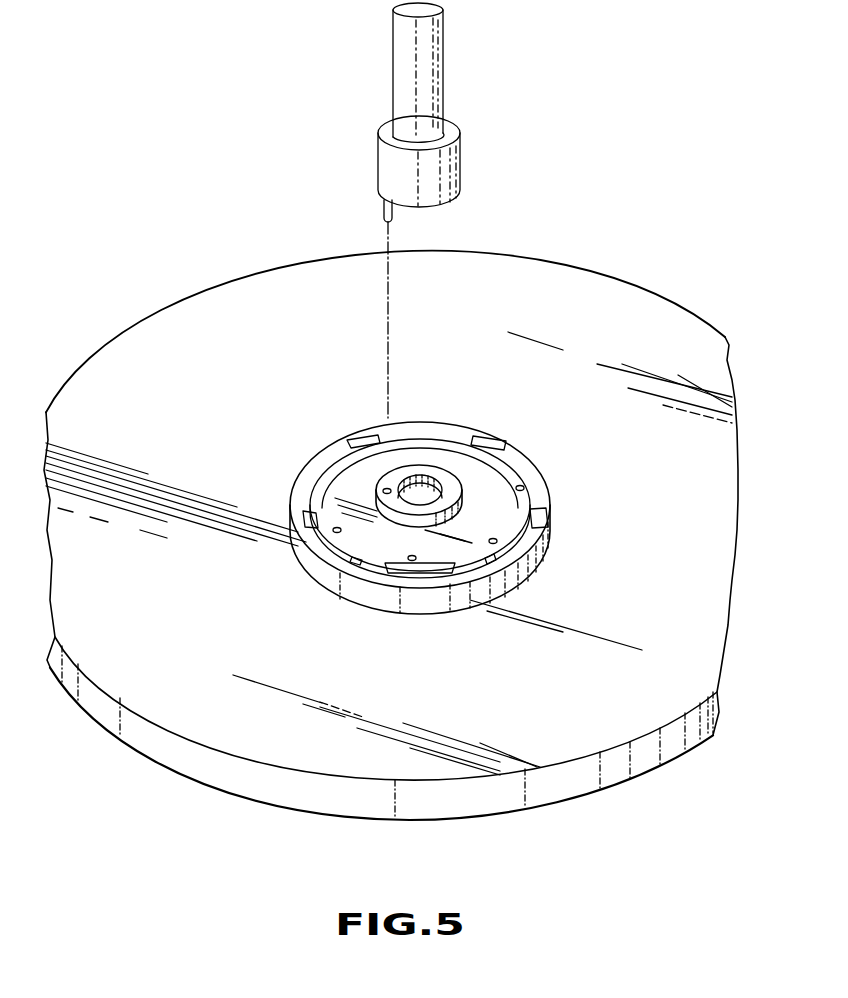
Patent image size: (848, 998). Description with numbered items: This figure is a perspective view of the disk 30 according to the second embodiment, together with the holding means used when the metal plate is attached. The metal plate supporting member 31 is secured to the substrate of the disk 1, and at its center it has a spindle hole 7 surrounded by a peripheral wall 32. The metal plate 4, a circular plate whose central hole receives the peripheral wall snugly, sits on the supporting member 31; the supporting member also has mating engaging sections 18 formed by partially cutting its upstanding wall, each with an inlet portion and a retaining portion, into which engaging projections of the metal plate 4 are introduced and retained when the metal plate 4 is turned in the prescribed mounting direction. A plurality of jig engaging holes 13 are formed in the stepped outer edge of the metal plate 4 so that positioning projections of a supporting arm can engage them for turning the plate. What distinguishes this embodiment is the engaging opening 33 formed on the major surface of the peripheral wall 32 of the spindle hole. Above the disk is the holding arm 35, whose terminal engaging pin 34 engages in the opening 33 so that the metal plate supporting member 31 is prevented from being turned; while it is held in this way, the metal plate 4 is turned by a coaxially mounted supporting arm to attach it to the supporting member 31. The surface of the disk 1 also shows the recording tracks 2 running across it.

The disk 1 is at (577, 293).
The recording tracks / grooves on disc 2 is at (546, 375).
The metal plate 4 is at (497, 483).
The spindle hole 7 is at (458, 465).
The jig engaging holes 13 is at (305, 548).
The mating engaging sections 18 is at (352, 418).
The disk 30 is at (208, 264).
The metal plate supporting member 31 is at (417, 607).
The peripheral wall 32 is at (451, 444).
The engaging opening 33 is at (383, 490).
The terminal engaging pin 34 is at (383, 202).
The holding arm 35 is at (447, 75).